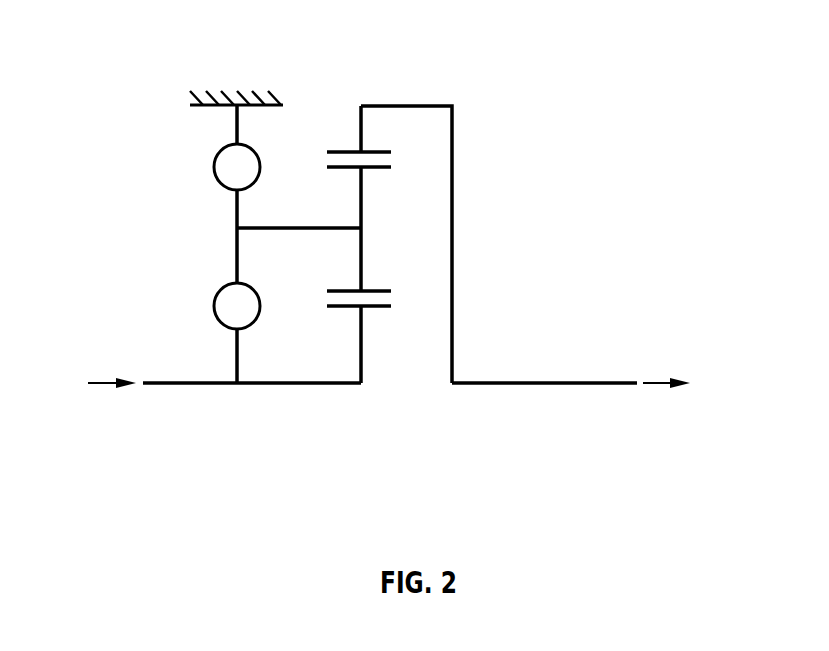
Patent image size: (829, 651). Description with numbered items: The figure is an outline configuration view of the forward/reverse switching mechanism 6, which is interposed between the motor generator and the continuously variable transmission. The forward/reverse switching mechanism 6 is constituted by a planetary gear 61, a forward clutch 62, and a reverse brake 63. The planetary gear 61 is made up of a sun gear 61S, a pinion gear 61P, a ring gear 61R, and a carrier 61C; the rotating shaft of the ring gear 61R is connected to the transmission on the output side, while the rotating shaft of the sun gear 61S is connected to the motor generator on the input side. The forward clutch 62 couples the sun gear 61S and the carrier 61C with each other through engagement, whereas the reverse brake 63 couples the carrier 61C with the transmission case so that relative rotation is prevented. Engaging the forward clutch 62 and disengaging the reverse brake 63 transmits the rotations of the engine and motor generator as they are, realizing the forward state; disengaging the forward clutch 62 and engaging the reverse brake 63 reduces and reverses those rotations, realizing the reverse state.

The forward/reverse switching mechanism 6 is at (430, 458).
The planetary gear 61 is at (367, 75).
The ring gear 61R is at (360, 119).
The carrier 61C is at (235, 222).
The pinion gear 61P is at (362, 262).
The sun gear 61S is at (362, 355).
The forward clutch 62 is at (214, 304).
The reverse brake 63 is at (214, 166).